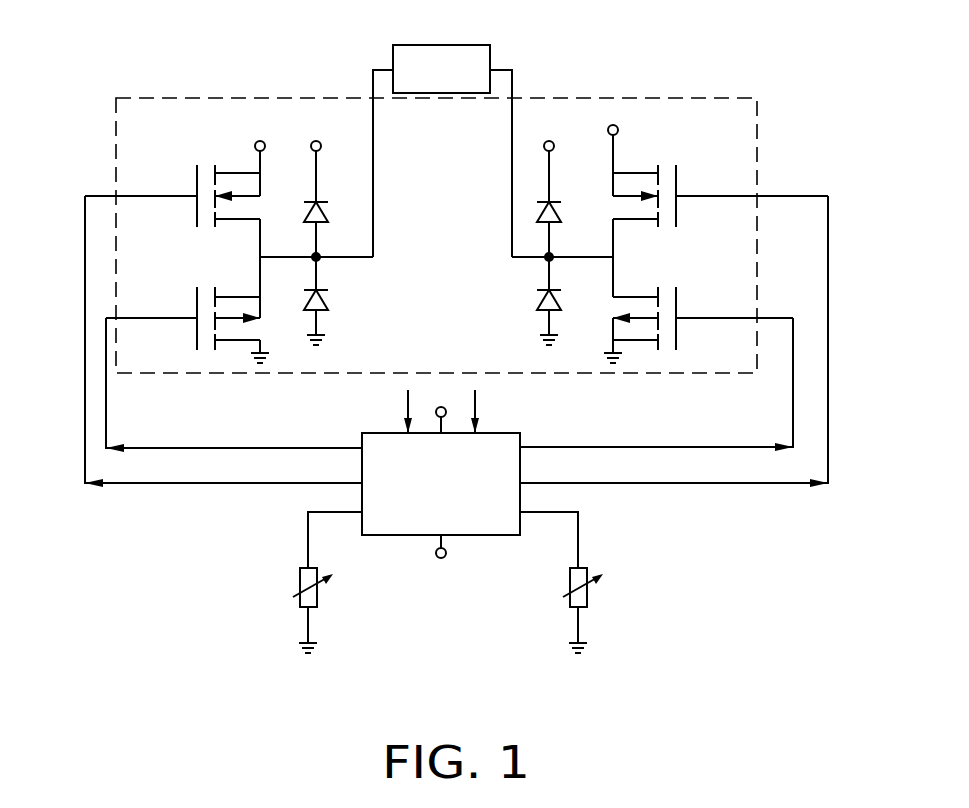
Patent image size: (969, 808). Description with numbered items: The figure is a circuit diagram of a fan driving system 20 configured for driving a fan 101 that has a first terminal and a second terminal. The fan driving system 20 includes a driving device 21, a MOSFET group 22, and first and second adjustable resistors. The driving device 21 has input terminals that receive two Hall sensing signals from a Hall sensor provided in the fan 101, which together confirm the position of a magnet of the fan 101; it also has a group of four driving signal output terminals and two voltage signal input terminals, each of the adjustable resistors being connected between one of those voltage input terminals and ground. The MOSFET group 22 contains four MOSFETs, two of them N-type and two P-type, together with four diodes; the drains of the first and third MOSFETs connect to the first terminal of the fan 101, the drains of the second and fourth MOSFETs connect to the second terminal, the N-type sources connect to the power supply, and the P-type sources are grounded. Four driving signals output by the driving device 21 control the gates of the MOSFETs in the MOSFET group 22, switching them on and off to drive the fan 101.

The fan 101 is at (442, 72).
The fan driving system 20 is at (775, 128).
The driving device 21 is at (393, 530).
The MOSFET group 22 is at (647, 103).